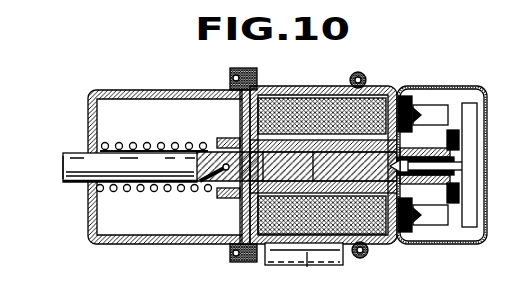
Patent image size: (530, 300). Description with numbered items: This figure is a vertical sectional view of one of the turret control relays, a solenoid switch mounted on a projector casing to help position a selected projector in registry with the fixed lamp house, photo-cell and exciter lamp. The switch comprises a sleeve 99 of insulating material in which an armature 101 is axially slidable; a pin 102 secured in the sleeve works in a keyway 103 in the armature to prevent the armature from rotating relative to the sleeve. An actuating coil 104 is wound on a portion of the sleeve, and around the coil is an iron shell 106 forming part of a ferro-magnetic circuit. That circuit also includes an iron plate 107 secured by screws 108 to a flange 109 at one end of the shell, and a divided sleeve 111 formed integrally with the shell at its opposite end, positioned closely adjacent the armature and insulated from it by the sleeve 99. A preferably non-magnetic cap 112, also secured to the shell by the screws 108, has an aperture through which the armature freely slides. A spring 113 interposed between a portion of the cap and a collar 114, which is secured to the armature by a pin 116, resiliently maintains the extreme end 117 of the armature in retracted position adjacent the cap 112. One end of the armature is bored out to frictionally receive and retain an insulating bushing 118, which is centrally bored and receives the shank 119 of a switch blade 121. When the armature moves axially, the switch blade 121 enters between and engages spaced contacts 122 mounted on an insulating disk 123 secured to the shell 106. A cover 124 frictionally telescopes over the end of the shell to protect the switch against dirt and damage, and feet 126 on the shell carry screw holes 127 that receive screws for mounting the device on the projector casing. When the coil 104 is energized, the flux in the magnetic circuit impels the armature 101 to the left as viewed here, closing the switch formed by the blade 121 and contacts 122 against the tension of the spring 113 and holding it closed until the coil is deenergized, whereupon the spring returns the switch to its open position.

The sleeve 99 is at (298, 150).
The armature 101 is at (163, 162).
The pin 102 is at (247, 118).
The keyway 103 is at (212, 147).
The actuating coil 104 is at (283, 110).
The iron shell 106 is at (337, 88).
The iron plate 107 is at (233, 88).
The screws 108 is at (230, 254).
The flange 109 is at (257, 262).
The divided sleeve 111 is at (420, 140).
The non-magnetic cap 112 is at (160, 90).
The spring 113 is at (140, 135).
The collar 114 is at (230, 196).
The pin 116 is at (206, 188).
The extreme end of the armature 117 is at (63, 158).
The insulating bushing 118 is at (429, 141).
The shank 119 is at (428, 190).
The switch blade 121 is at (470, 122).
The spaced contacts 122 is at (440, 113).
The insulating disk 123 is at (403, 98).
The cover 124 is at (427, 246).
The feet 126 is at (307, 264).
The screw holes 127 is at (343, 262).